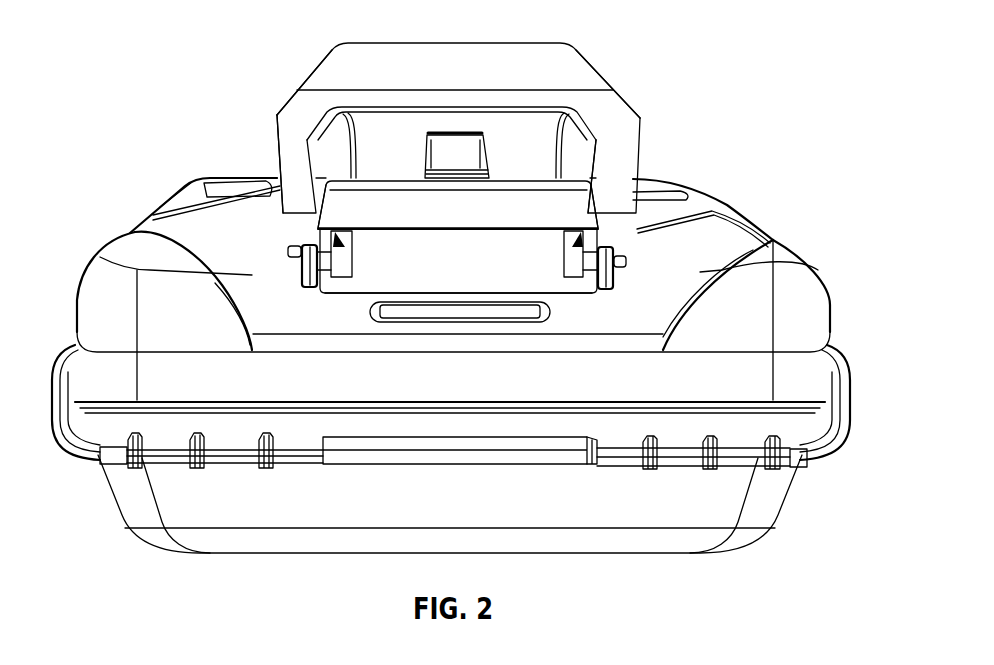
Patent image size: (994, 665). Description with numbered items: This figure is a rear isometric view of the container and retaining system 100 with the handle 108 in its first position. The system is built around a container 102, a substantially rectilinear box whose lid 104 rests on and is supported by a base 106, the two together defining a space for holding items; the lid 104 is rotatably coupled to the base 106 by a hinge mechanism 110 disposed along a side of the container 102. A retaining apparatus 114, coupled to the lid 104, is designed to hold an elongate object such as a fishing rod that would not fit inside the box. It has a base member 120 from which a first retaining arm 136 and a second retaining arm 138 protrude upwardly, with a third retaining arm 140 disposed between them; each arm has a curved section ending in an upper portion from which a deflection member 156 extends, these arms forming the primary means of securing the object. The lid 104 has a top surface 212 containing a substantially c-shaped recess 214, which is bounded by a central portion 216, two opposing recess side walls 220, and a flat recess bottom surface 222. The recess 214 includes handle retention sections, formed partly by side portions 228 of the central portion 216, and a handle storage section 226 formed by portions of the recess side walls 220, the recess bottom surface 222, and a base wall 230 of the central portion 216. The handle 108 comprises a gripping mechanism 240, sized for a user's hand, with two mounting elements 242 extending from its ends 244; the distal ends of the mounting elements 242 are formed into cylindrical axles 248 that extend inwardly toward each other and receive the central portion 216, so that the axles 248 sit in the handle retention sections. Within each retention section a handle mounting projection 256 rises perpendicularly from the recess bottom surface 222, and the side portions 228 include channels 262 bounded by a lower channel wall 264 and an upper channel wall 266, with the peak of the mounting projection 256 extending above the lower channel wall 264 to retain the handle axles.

The container and retaining system 100 is at (146, 36).
The container 102 is at (195, 160).
The lid 104 is at (713, 207).
The base 106 is at (752, 538).
The handle 108 is at (603, 100).
The hinge mechanism 110 is at (420, 440).
The retaining apparatus 114 is at (437, 150).
The base member 120 is at (390, 178).
The first retaining arm 136 is at (593, 148).
The second retaining arm 138 is at (287, 115).
The third retaining arm 140 is at (472, 163).
The deflection member 156 is at (456, 131).
The top surface 212 is at (200, 185).
The recess 214 is at (255, 278).
The central portion 216 is at (468, 217).
The recess side walls 220 is at (260, 260).
The recess bottom surface 222 is at (557, 328).
The handle storage section 226 is at (418, 338).
The side portions 228 is at (327, 207).
The base wall 230 is at (471, 270).
The gripping mechanism 240 is at (438, 55).
The mounting elements 242 is at (285, 148).
The ends 244 is at (328, 60).
The cylindrical axles 248 is at (217, 183).
The handle mounting projection 256 is at (303, 287).
The channels 262 is at (341, 264).
The lower channel wall 264 is at (333, 278).
The upper channel wall 266 is at (355, 238).